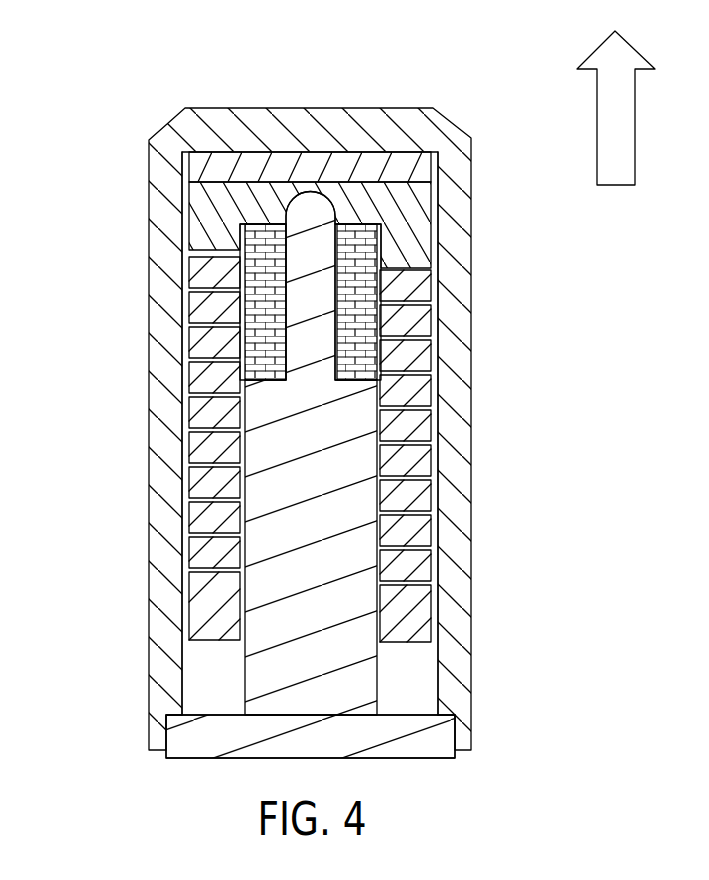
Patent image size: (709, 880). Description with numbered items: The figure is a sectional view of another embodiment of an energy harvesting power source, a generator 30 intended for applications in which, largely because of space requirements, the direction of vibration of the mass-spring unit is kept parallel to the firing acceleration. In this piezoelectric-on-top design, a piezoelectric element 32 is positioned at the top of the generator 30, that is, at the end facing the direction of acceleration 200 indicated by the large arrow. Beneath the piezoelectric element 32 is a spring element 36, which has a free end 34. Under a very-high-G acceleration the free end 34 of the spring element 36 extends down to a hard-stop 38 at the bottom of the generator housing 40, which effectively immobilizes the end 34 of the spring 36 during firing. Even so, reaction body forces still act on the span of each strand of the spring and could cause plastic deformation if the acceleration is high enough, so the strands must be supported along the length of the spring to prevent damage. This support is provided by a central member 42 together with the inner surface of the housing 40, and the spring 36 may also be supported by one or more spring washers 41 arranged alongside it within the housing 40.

The generator 30 is at (285, 410).
The piezoelectric element 32 is at (338, 165).
The free end 34 is at (423, 643).
The spring element 36 is at (119, 192).
The hard-stop 38 is at (200, 712).
The generator housing 40 is at (468, 608).
The spring washer 41 is at (365, 258).
The member 42 is at (352, 552).
The direction of acceleration 200 is at (597, 128).